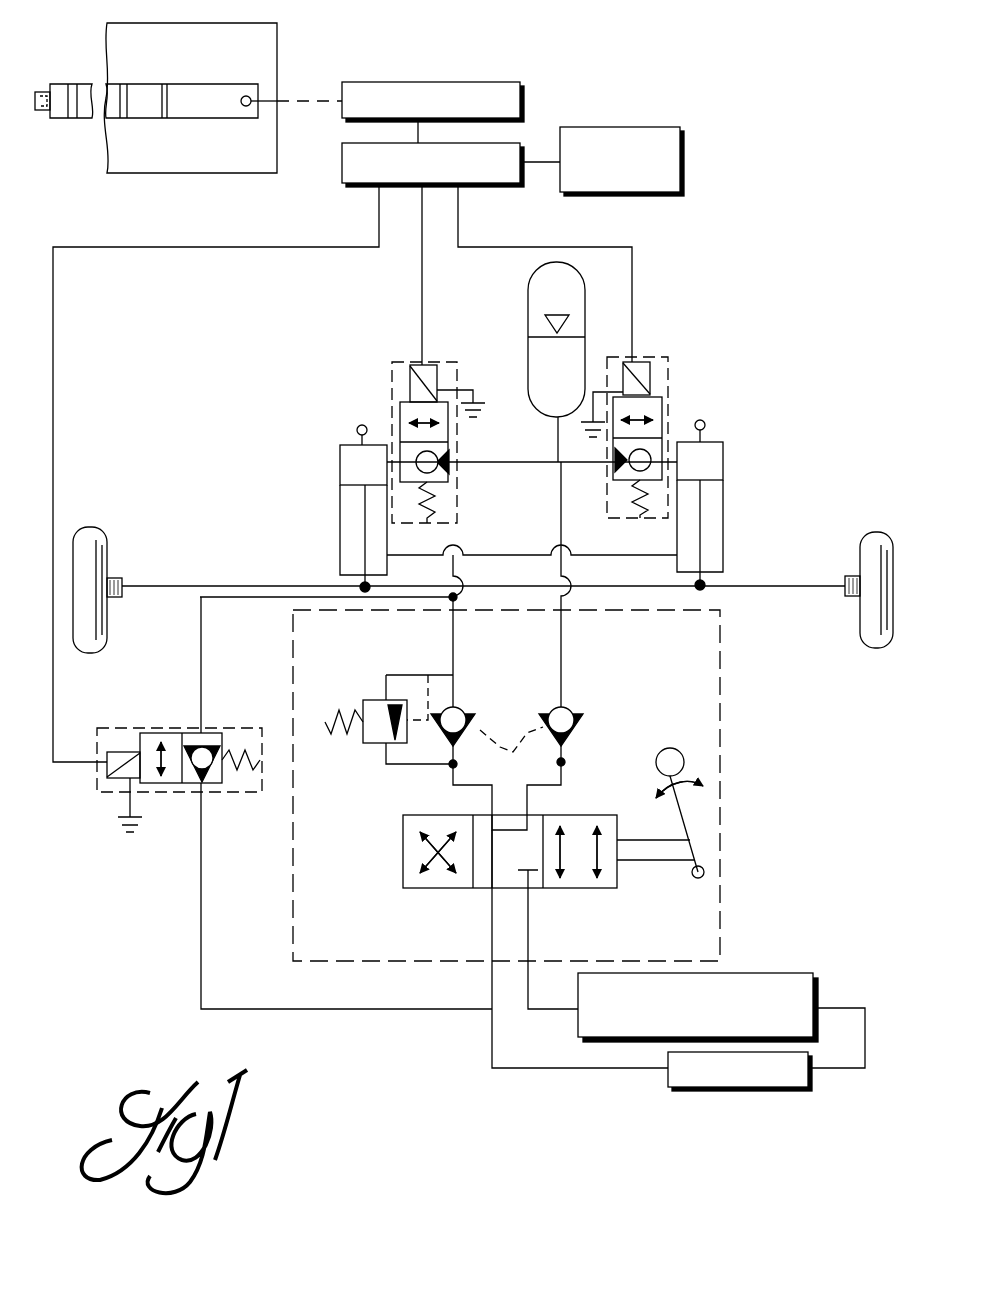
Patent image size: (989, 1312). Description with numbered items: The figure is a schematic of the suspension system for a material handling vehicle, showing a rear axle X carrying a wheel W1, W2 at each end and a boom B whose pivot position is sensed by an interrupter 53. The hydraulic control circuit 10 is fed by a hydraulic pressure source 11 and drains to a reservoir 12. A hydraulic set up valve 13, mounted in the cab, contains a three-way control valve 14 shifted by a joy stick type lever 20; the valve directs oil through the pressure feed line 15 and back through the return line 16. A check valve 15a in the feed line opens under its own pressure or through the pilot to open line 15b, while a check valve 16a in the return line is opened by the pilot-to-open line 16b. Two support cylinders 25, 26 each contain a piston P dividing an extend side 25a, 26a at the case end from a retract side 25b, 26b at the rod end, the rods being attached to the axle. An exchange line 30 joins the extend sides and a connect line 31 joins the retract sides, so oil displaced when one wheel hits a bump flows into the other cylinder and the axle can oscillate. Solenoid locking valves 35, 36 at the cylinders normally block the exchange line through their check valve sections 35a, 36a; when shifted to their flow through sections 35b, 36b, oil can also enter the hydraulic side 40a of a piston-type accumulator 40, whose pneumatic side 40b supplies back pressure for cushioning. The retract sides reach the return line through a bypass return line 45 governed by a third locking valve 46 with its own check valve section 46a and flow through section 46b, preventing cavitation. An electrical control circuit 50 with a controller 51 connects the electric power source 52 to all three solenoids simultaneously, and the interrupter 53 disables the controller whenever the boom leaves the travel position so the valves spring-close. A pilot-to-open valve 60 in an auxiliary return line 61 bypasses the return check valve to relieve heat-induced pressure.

The hydraulic control circuit 10 is at (730, 596).
The hydraulic pressure source 11 is at (760, 973).
The reservoir 12 is at (725, 1087).
The hydraulic set up valve 13 is at (730, 696).
The 3-way control valve 14 is at (403, 853).
The pressure feed line 15 is at (563, 656).
The check valve 15a is at (572, 738).
The pilot to open line 15b is at (470, 766).
The return line 16 is at (452, 625).
The check valve 16a is at (468, 716).
The pilot-to-open line 16b is at (511, 757).
The joy stick type lever 20 is at (690, 820).
The support cylinder 25 is at (759, 485).
The extend side 25a is at (712, 462).
The retract side 25b is at (722, 538).
The support cylinder 26 is at (303, 486).
The extend side 26a is at (348, 450).
The retract side 26b is at (342, 542).
The exchange line 30 is at (500, 462).
The connect line 31 is at (604, 553).
The electric solenoid valve 35 is at (649, 399).
The check valve section 35a is at (627, 468).
The flow through section 35b is at (650, 410).
The electric solenoid valve 36 is at (432, 412).
The check valve section 36a is at (440, 470).
The flow through section 36b is at (402, 415).
The hydraulic/pneumatic accumulator 40 is at (548, 357).
The hydraulic side 40a is at (530, 352).
The back pressure pneumatic side 40b is at (575, 295).
The bypass return line 45 is at (277, 599).
The third locking valve 46 is at (179, 773).
The check valve section 46a is at (208, 745).
The flow through section 46b is at (168, 735).
The electrical control circuit 50 is at (580, 88).
The controller 51 is at (342, 155).
The electric power source 52 is at (682, 160).
The interrupter 53 is at (460, 82).
The pilot-to-open valve 60 is at (363, 738).
The auxiliary return line 61 is at (400, 675).
The boom B is at (200, 118).
The piston P is at (352, 487).
The rear axle X is at (180, 590).
The wheel W1 is at (876, 650).
The wheel W2 is at (85, 655).